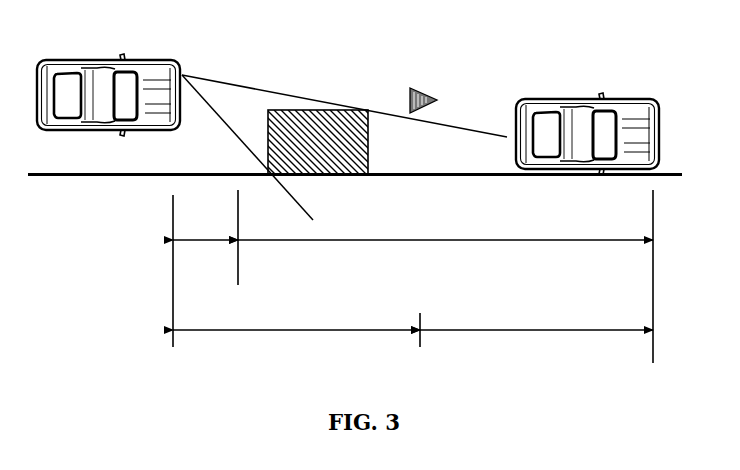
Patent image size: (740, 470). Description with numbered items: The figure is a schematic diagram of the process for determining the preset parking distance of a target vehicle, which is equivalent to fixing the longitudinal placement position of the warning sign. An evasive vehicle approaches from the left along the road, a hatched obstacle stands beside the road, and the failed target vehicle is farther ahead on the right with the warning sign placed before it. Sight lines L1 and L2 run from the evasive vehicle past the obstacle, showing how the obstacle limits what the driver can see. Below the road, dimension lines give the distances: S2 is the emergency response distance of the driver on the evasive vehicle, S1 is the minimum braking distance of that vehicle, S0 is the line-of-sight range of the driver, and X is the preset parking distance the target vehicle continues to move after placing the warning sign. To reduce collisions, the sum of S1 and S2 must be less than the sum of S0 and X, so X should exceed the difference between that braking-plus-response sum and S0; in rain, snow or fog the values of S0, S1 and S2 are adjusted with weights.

The element obstacle is at (297, 108).
The line of sight L1 is at (344, 98).
The line of sight L2 is at (247, 147).
The line-of-sight range S0 is at (296, 349).
The minimum braking distance S1 is at (445, 264).
The emergency response distance S2 is at (205, 264).
The preset parking distance X is at (536, 349).